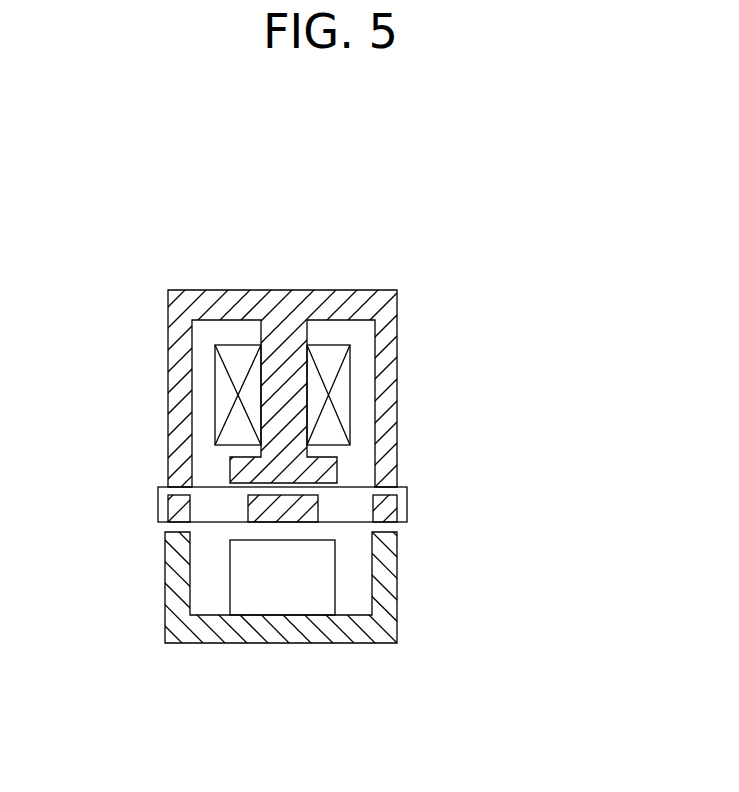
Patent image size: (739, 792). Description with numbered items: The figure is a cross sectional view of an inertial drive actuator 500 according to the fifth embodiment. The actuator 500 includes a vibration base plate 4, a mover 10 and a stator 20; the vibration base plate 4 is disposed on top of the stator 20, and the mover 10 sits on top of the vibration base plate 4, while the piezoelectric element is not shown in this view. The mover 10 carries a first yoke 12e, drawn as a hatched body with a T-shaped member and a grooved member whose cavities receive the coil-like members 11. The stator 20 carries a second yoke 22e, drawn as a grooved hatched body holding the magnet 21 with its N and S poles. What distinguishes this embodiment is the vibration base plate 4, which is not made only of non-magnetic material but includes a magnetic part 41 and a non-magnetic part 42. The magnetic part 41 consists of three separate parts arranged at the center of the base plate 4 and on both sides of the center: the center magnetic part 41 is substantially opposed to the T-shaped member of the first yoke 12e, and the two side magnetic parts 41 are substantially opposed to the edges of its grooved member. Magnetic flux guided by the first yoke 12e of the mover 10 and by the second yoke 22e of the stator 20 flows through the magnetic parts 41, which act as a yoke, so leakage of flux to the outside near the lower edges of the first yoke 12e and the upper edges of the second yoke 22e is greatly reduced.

The inertial drive actuator 500 is at (388, 217).
The mover 10 is at (523, 275).
The first yoke 12e is at (392, 320).
The coil 11 is at (333, 393).
The vibration base plate 4 is at (352, 702).
The non-magnetic part 42 is at (157, 505).
The magnetic part 41 is at (190, 522).
The stator 20 is at (523, 530).
The second yoke 22e is at (390, 623).
The permanent magnet 21 is at (335, 580).